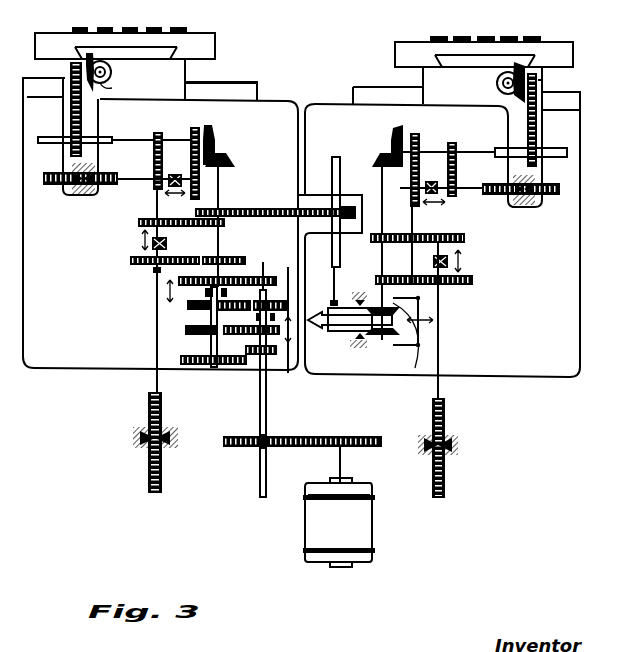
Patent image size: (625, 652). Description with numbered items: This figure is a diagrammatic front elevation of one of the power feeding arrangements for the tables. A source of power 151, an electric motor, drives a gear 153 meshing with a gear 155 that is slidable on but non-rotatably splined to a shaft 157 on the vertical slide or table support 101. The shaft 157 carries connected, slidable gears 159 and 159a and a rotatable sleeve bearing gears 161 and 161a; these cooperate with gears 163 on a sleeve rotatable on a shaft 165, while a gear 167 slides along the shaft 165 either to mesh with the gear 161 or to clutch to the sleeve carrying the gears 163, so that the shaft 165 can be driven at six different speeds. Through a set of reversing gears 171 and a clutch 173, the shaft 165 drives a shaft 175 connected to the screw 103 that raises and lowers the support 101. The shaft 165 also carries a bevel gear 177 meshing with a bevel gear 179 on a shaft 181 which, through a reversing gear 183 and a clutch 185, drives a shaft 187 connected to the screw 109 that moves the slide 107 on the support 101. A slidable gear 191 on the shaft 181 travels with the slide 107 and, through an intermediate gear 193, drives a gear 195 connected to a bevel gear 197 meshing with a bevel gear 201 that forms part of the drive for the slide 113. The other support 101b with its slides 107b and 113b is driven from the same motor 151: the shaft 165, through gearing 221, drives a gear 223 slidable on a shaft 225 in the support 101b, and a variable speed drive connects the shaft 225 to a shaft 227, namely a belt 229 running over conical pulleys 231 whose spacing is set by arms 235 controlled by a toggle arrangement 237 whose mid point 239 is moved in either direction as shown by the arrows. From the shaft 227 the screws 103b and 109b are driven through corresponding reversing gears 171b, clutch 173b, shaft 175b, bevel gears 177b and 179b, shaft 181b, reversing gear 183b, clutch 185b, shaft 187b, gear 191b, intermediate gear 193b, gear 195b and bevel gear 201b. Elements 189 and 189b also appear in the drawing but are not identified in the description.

The table support 101 is at (60, 348).
The table support 101b is at (561, 360).
The screw 103 is at (146, 408).
The screw 103b is at (447, 413).
The slide 107 is at (190, 75).
The slide 107b is at (355, 88).
The screw 109 is at (56, 185).
The screw 109b is at (550, 200).
The slide 113 is at (216, 44).
The slide 113b is at (395, 46).
The source of power 151 is at (363, 523).
The gear 153 is at (329, 436).
The gear 155 is at (267, 448).
The shaft 157 is at (259, 470).
The gear 159 is at (287, 360).
The gear 159a is at (256, 367).
The gear 161 is at (258, 276).
The gear 161a is at (288, 298).
The gears 163 is at (188, 357).
The shaft 165 is at (221, 256).
The gear 167 is at (153, 271).
The reversing gears 171 is at (133, 256).
The reversing gears 171b is at (476, 276).
The clutch 173 is at (167, 243).
The clutch 173b is at (432, 262).
The shaft 175 is at (157, 350).
The shaft 175b is at (439, 352).
The bevel gear 177 is at (226, 150).
The bevel gear 177b is at (386, 158).
The bevel gear 179 is at (209, 134).
The bevel gear 179b is at (392, 135).
The shaft 181 is at (123, 139).
The shaft 181b is at (473, 151).
The reversing gear 183 is at (152, 160).
The reversing gear 183b is at (416, 136).
The gear 189 is at (195, 163).
The gear 189b is at (458, 166).
The clutch 185 is at (167, 193).
The clutch 185b is at (444, 196).
The shaft 187 is at (165, 177).
The shaft 187b is at (470, 190).
The gear 191 is at (72, 147).
The gear 191b is at (533, 144).
The intermediate gear 193 is at (72, 103).
The intermediate gear 193b is at (538, 103).
The gear 195 is at (70, 67).
The gear 195b is at (538, 82).
The bevel gear 197 is at (108, 85).
The bevel gear 201 is at (112, 72).
The bevel gear 201b is at (498, 80).
The gearing 221 is at (323, 207).
The gear 223 is at (344, 205).
The shaft 225 is at (334, 175).
The shaft 227 is at (381, 255).
The belt 229 is at (331, 304).
The conical pulleys 231 is at (310, 323).
The arms 235 is at (381, 307).
The toggle arrangement 237 is at (421, 338).
The mid point 239 is at (421, 318).